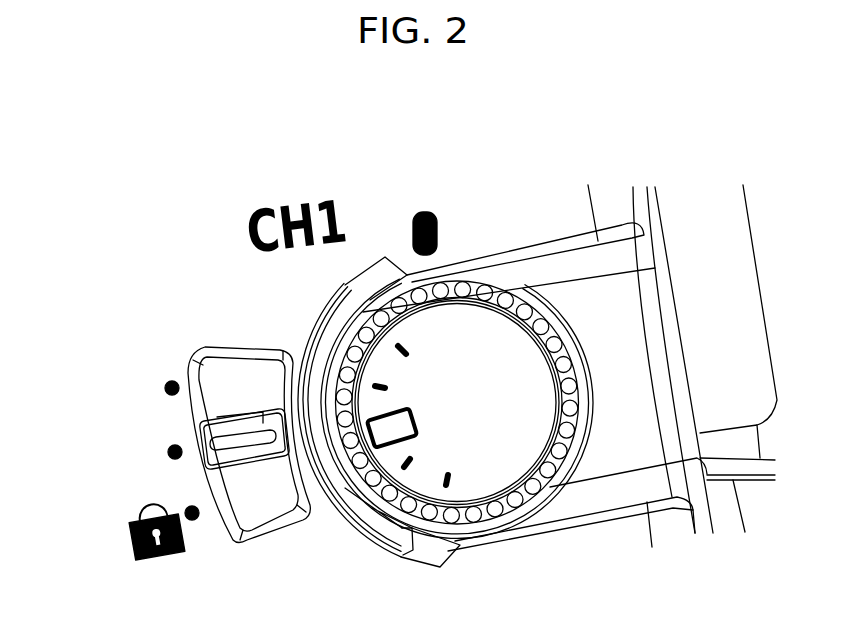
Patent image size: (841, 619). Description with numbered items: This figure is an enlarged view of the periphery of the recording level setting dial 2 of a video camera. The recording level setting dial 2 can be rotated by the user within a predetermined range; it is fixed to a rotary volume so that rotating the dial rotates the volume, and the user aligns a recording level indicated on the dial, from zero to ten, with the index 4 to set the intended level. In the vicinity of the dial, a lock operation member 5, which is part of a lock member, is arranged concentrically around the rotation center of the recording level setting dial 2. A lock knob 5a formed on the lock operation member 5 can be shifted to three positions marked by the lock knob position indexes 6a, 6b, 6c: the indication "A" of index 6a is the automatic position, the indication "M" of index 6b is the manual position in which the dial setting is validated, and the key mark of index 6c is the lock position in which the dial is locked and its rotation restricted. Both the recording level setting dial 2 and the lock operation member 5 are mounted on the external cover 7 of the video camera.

The recording level setting dial 2 is at (487, 422).
The index 4 is at (438, 233).
The lock operation member 5 is at (277, 483).
The lock knob 5a is at (245, 447).
The lock knob position index 6a is at (113, 393).
The lock knob position index 6b is at (113, 466).
The lock knob position index 6c is at (130, 553).
The external cover 7 is at (615, 312).